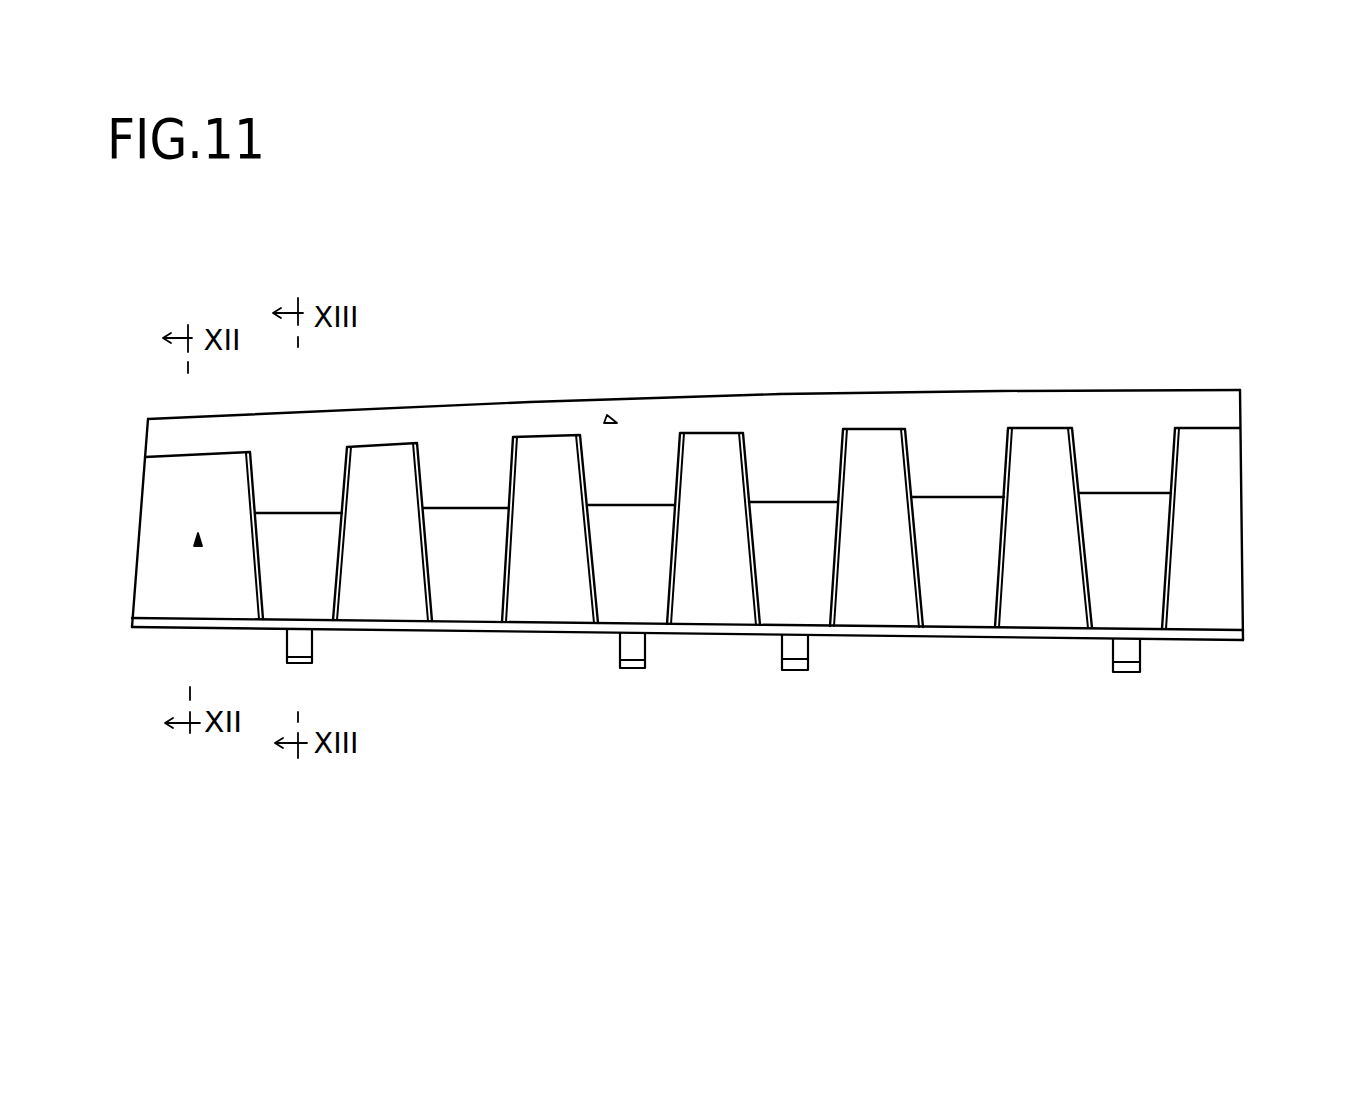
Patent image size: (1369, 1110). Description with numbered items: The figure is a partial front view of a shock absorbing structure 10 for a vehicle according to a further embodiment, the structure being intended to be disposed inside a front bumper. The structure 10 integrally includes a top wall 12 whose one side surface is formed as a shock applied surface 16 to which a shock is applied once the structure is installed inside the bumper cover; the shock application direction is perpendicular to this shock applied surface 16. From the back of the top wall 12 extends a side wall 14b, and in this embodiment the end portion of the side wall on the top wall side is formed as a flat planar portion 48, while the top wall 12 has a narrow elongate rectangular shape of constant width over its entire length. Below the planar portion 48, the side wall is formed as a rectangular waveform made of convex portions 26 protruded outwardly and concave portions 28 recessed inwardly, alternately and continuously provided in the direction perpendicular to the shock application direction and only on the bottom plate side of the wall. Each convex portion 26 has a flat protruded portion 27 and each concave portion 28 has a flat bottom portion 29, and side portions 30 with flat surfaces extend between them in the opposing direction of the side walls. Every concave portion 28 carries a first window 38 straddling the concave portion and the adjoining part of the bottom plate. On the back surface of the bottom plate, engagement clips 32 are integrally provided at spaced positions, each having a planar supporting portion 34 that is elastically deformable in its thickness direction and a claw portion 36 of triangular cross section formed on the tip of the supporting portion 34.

The shock absorbing structure 10 is at (790, 390).
The top wall 12 is at (682, 394).
The side wall 14b is at (198, 536).
The shock applied surface 16 is at (627, 397).
The convex portion 26 is at (697, 584).
The protruded portion 27 is at (576, 589).
The concave portion 28 is at (797, 494).
The bottom portion 29 is at (694, 494).
The side portion 30 is at (718, 475).
The engagement clip 32 is at (759, 705).
The planar supporting portion 34 is at (757, 680).
The claw portion 36 is at (716, 693).
The first window 38 is at (799, 647).
The planar portion 48 is at (612, 422).